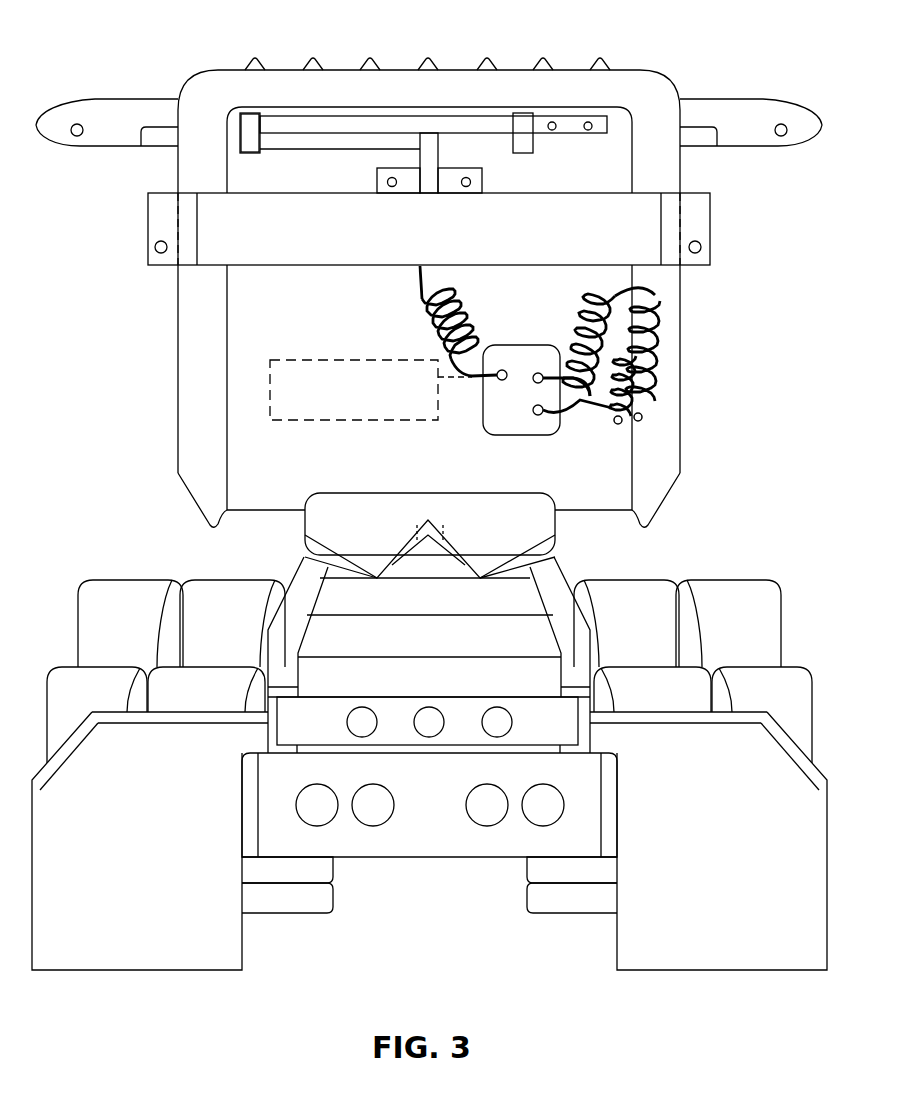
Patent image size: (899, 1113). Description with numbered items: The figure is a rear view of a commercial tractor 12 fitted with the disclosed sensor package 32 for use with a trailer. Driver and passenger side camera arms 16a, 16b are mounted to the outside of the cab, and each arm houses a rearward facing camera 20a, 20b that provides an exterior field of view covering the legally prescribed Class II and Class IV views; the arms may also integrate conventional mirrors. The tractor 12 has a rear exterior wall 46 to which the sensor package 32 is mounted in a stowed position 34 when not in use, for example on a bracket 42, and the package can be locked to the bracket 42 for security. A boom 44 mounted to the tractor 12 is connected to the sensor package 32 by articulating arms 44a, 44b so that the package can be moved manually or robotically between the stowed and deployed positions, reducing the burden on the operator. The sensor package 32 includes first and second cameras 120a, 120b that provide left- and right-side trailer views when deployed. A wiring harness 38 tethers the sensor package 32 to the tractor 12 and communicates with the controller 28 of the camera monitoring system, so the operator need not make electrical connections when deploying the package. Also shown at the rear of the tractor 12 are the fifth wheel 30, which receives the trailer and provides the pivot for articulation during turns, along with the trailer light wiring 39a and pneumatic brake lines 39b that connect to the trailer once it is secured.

The tractor 12 is at (740, 328).
The driver side camera arm 16a is at (103, 98).
The passenger side camera arm 16b is at (725, 98).
The rearward facing camera 20a is at (74, 137).
The rearward facing camera 20b is at (784, 137).
The controller 28 is at (363, 421).
The fifth wheel 30 is at (540, 523).
The sensor package 32 is at (578, 212).
The stowed position 34 is at (278, 282).
The wiring harness 38 is at (417, 288).
The trailer light wiring 39a is at (653, 318).
The pneumatic brake lines 39b is at (633, 413).
The bracket 42 is at (463, 167).
The boom 44 is at (436, 108).
The articulating arm 44a is at (310, 128).
The articulating arm 44b is at (323, 148).
The rear exterior wall 46 is at (240, 463).
The first camera 120a is at (157, 253).
The second camera 120b is at (701, 245).